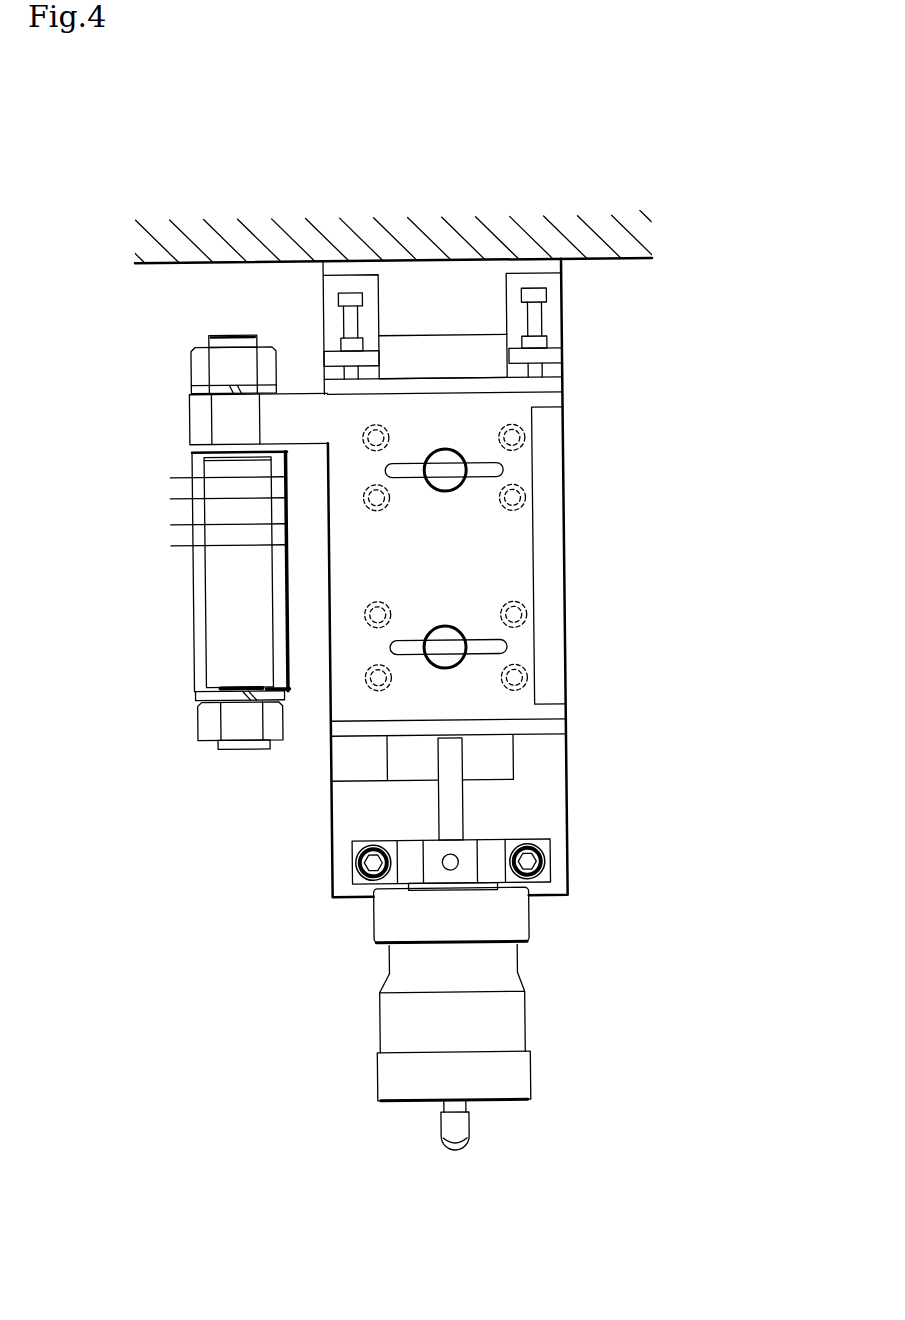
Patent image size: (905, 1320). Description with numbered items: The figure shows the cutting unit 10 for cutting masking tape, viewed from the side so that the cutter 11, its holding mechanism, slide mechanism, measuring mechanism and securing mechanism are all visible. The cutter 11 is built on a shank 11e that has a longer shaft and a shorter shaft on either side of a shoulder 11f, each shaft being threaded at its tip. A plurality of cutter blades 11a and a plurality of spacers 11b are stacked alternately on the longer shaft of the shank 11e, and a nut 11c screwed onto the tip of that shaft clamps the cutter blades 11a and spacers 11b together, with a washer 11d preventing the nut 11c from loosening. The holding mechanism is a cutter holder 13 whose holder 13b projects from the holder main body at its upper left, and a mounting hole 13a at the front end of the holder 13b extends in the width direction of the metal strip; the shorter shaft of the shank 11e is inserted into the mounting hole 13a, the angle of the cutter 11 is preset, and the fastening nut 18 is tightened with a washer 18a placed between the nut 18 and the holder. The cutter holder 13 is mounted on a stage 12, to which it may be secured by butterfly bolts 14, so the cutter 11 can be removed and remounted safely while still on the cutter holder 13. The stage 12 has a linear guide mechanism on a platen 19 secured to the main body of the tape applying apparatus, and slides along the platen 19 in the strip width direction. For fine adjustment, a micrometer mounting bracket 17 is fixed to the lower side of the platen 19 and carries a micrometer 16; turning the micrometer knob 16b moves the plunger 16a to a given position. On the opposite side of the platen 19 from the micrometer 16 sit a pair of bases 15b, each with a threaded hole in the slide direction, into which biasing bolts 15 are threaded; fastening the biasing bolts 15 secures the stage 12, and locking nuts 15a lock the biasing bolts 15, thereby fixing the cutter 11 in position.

The cutting unit 10 is at (710, 286).
The cutter 11 is at (184, 622).
The cutter blades 11a is at (170, 545).
The spacers 11b is at (192, 509).
The nut 11c is at (198, 741).
The washer 11d is at (194, 697).
The shank 11e is at (219, 748).
The shoulder 11f is at (191, 450).
The stage 12 is at (562, 592).
The cutter holder 13 is at (531, 651).
The mounting hole 13a is at (205, 421).
The holder 13b is at (209, 419).
The butterfly bolts 14 is at (486, 643).
The biasing bolts 15 is at (357, 291).
The locking nuts 15a is at (342, 341).
The bases 15b is at (326, 352).
The micrometer 16 is at (511, 1025).
The plunger 16a is at (457, 817).
The micrometer knob 16b is at (461, 1134).
The micrometer mounting bracket 17 is at (546, 873).
The fastening nut 18 is at (195, 360).
The washer 18a is at (198, 389).
The platen 19 is at (562, 757).